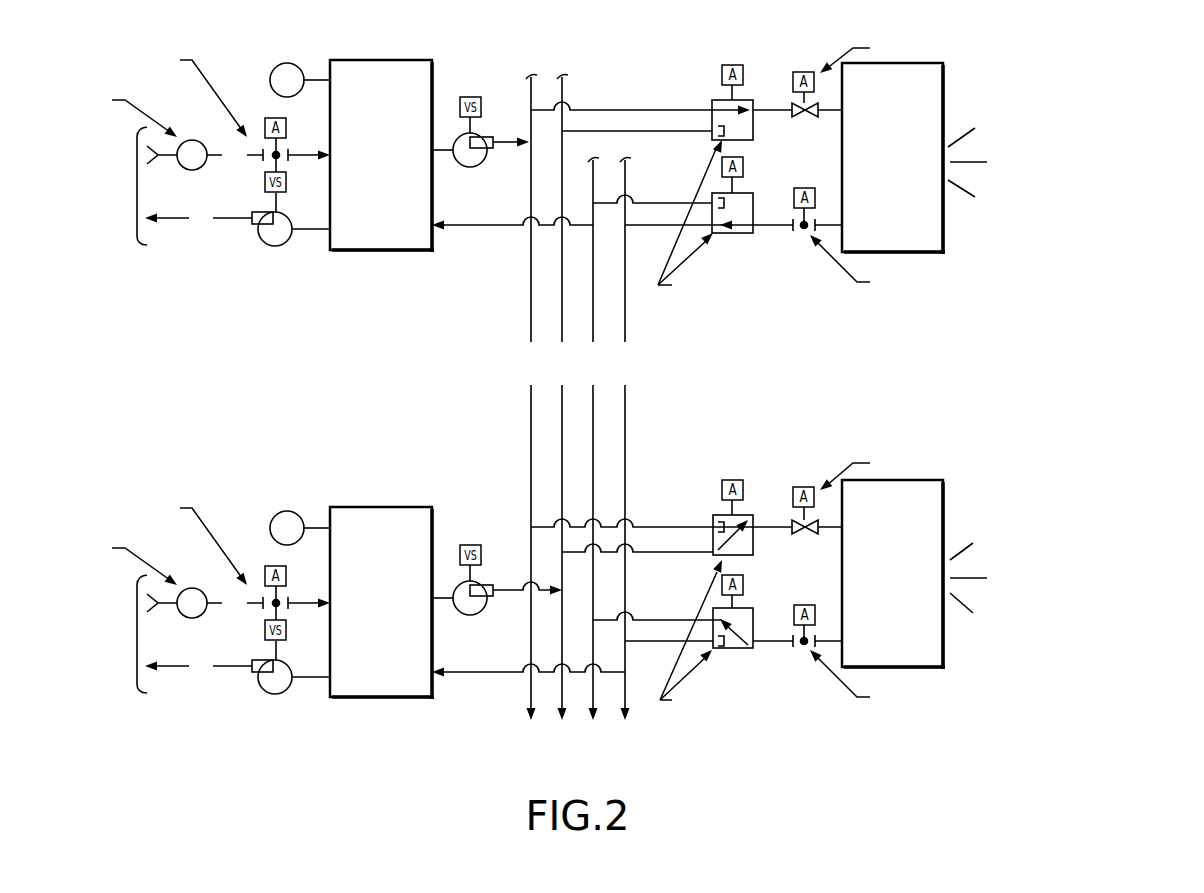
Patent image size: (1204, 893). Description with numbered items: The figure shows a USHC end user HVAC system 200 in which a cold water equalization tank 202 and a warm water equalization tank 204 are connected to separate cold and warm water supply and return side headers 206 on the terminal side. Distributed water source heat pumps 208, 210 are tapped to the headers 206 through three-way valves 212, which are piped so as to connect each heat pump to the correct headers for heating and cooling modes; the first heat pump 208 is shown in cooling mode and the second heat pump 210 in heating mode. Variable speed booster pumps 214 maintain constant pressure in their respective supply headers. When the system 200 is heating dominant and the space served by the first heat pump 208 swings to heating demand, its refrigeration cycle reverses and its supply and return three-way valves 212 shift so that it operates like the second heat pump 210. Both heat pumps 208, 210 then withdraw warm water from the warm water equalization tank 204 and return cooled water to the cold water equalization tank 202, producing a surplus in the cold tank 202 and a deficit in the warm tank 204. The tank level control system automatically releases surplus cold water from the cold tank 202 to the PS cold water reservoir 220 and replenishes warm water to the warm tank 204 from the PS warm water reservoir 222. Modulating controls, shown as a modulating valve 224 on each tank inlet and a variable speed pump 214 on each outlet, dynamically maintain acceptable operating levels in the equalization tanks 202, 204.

The USHC end user HVAC system 200 is at (1101, 92).
The cold water equalization tank 202 is at (402, 251).
The warm water equalization tank 204 is at (402, 698).
The supply and return side headers 206 is at (704, 452).
The water source heat pump No. 1 208 is at (944, 252).
The water source heat pump No. 2 210 is at (944, 667).
The 3-way valve 212 is at (747, 140).
The variable speed booster pump 214 is at (293, 241).
The PS cold water reservoir 220 is at (107, 232).
The PS warm water reservoir 222 is at (107, 680).
The modulating valve 224 is at (266, 117).